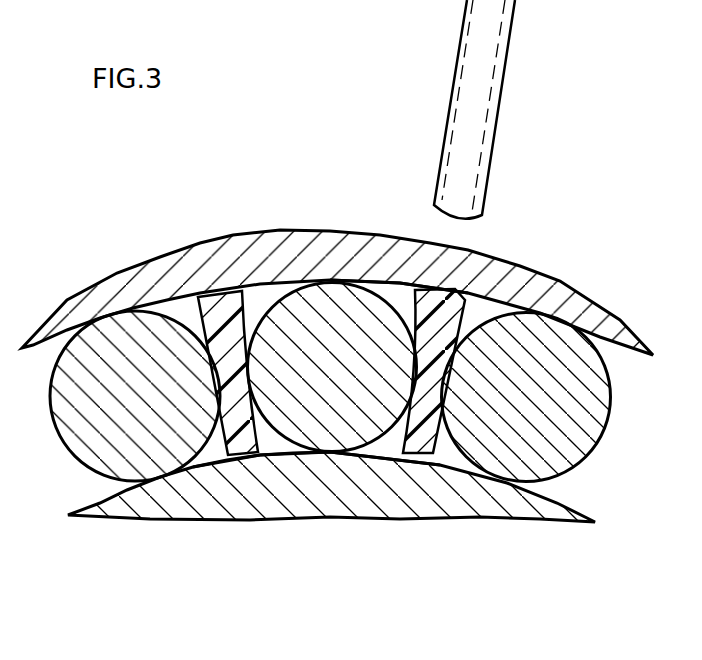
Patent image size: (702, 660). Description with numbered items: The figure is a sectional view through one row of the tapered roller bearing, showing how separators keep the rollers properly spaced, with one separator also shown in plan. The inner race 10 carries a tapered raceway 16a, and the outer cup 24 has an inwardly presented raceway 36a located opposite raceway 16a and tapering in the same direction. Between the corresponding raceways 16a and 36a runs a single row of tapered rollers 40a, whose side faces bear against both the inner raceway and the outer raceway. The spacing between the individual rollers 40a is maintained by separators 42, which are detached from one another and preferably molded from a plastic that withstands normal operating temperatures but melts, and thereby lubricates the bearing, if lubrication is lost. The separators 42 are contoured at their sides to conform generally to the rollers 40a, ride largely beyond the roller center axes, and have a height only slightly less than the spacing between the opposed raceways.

The inner race 10 is at (400, 505).
The raceway 16a is at (280, 458).
The cup 24 is at (130, 285).
The raceway 36a is at (399, 292).
The tapered rollers 40a is at (165, 410).
The separators 42 is at (500, 97).